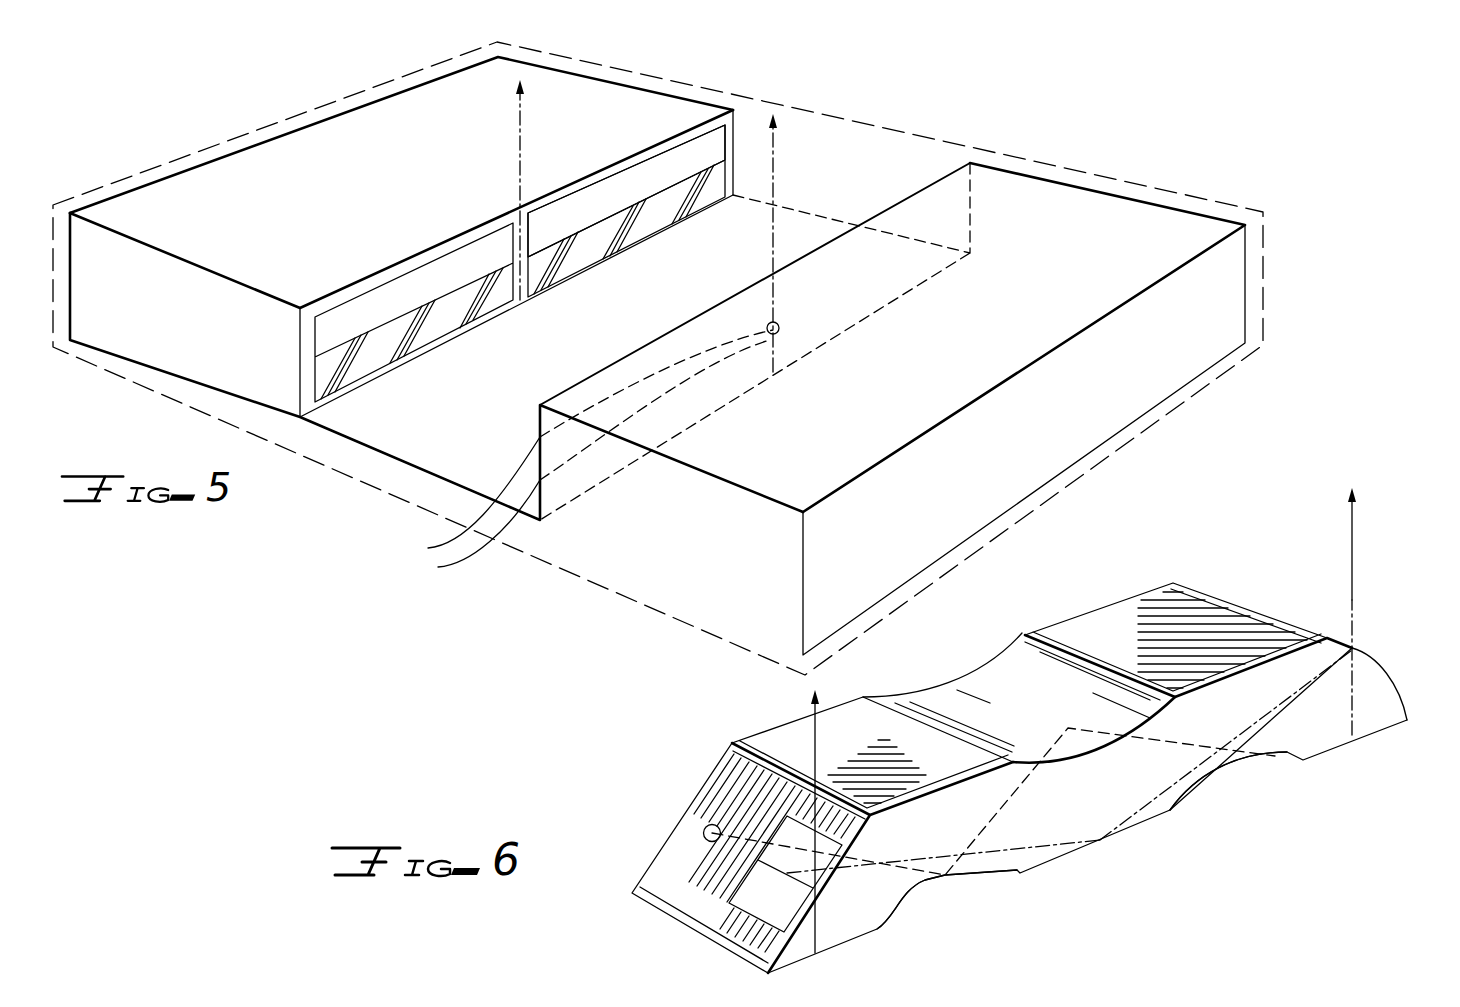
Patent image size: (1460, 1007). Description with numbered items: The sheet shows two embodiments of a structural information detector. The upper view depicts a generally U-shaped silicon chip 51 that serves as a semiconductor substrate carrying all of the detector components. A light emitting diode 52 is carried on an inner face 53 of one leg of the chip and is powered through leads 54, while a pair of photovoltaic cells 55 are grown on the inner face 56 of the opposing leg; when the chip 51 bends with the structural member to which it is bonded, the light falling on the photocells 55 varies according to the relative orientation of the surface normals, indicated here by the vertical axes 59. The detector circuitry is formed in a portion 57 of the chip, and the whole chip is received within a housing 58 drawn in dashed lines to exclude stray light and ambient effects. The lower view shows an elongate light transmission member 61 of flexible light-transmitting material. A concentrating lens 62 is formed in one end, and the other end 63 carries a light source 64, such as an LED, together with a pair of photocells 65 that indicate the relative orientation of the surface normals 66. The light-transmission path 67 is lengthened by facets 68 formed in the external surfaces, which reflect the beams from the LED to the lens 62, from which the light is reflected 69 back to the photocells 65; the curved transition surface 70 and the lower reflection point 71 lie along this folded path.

In FIG. 5, the silicon chip 51 is at (1073, 447).
In FIG. 5, the light emitting diode 52 is at (780, 322).
In FIG. 5, the inner face 53 is at (526, 421).
In FIG. 5, the leads 54 is at (437, 553).
In FIG. 5, the photovoltaic cells 55 is at (540, 273).
In FIG. 5, the inner face 56 is at (710, 152).
In FIG. 5, the portion of the silicon chip 57 is at (355, 130).
In FIG. 5, the housing 58 is at (950, 142).
In FIG. 5, the vertical axes 59 is at (520, 135).
In FIG. 6, the light transmission member 61 is at (1078, 852).
In FIG. 6, the concentrating lens 62 is at (1358, 653).
In FIG. 6, the other end 63 is at (720, 925).
In FIG. 6, the light source 64 is at (704, 827).
In FIG. 6, the photocells 65 is at (790, 904).
In FIG. 6, the surface vector coordinates 66 is at (816, 742).
In FIG. 6, the light-transmission path 67 is at (1036, 846).
In FIG. 6, the facets 68 is at (1173, 740).
In FIG. 6, the reflected light 69 is at (1132, 815).
In FIG. 6, the curved surface 70 is at (1003, 672).
In FIG. 6, the reflection point 71 is at (912, 890).